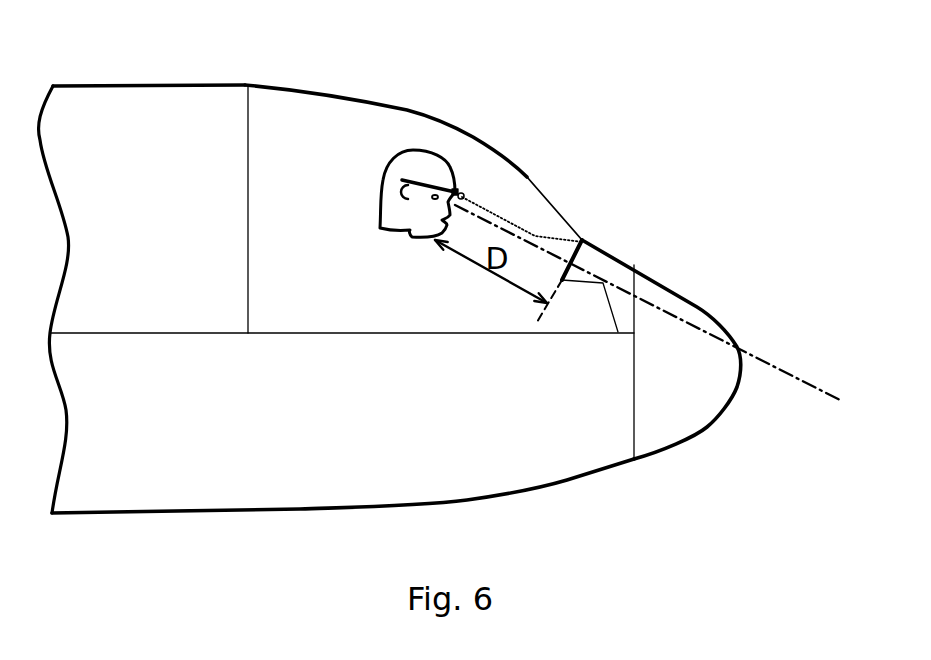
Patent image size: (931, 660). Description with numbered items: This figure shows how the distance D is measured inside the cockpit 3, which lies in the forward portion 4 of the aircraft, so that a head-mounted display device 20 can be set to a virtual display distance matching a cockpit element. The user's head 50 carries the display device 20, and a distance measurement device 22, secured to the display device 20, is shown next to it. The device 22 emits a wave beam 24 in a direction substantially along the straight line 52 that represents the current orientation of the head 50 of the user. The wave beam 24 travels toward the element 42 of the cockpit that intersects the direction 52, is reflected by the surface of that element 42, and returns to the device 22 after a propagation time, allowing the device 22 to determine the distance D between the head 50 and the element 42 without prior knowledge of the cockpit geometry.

The cockpit 3 is at (288, 290).
The forward portion 4 is at (645, 60).
The display device 20 is at (456, 188).
The distance measurement device 22 is at (463, 193).
The wave beam 24 is at (510, 222).
The element of the cockpit 42 is at (582, 238).
The head 50 is at (400, 155).
The direction 52 is at (770, 363).